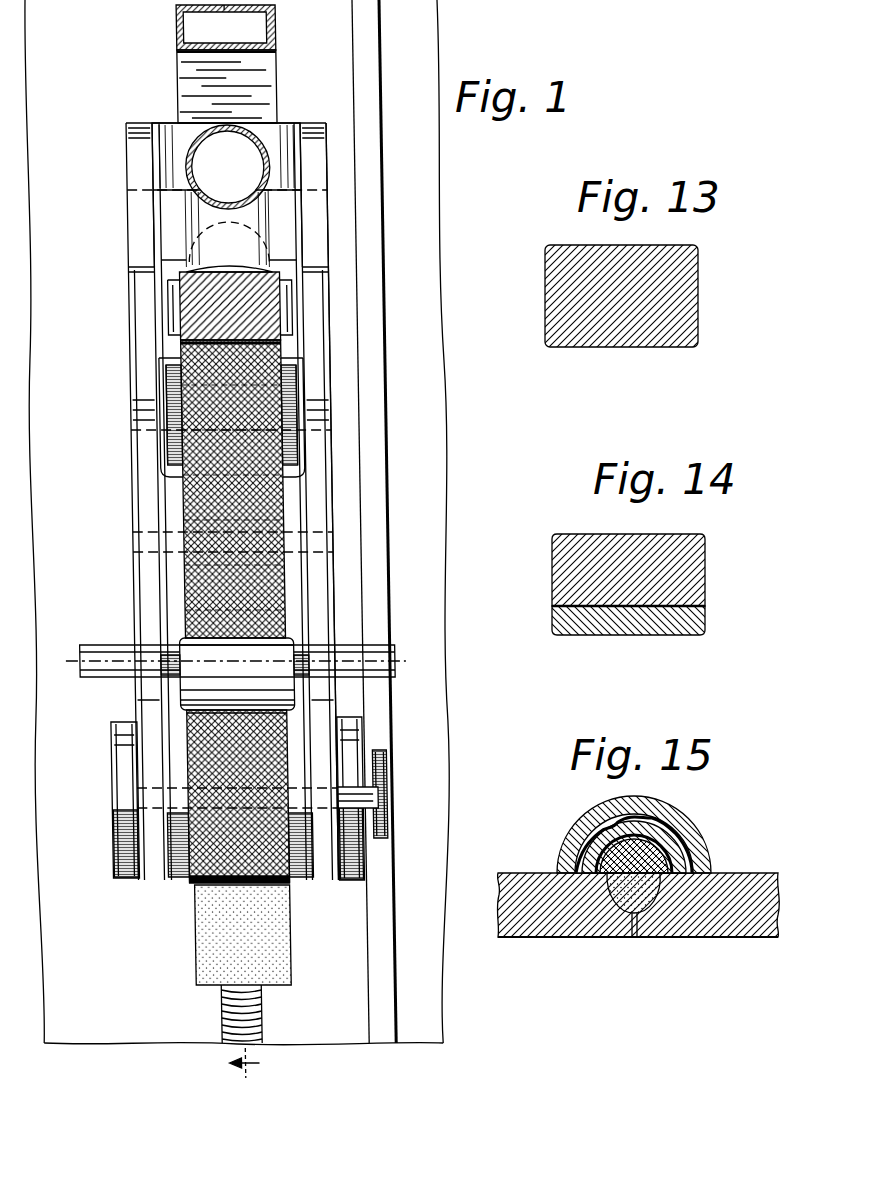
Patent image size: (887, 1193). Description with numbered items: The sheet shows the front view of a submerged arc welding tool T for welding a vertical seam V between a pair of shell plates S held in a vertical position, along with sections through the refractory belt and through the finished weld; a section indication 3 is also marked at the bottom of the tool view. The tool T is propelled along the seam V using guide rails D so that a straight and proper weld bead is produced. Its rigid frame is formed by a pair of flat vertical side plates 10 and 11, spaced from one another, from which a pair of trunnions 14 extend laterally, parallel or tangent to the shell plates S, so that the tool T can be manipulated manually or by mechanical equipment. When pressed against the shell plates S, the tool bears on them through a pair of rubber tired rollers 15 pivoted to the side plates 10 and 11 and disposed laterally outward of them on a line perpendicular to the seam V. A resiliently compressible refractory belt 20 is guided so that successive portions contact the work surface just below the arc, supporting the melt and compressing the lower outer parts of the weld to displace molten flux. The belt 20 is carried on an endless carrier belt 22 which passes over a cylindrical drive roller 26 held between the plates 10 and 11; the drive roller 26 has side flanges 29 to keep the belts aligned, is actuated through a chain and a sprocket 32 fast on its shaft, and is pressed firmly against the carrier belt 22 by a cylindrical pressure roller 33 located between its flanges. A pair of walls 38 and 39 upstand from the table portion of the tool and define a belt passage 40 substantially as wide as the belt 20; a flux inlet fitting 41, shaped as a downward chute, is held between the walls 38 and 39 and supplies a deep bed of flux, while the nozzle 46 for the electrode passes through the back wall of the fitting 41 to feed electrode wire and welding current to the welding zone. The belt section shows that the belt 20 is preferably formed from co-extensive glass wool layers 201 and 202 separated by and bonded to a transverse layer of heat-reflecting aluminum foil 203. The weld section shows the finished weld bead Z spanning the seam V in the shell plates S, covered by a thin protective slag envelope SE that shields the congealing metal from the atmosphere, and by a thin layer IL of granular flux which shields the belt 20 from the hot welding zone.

In FIG. 1, the side plate 10 is at (124, 292).
In FIG. 1, the side plate 11 is at (326, 287).
In FIG. 1, the trunnions 14 is at (69, 661).
In FIG. 1, the rubber tired rollers 15 is at (100, 876).
In FIG. 1, the refractory belt 20 is at (178, 317).
In FIG. 13, the refractory belt 20 is at (698, 302).
In FIG. 1, the carrier belt 22 is at (176, 633).
In FIG. 1, the drive roller 26 is at (166, 882).
In FIG. 1, the side flanges 29 is at (165, 448).
In FIG. 1, the sprocket 32 is at (375, 773).
In FIG. 1, the pressure roller 33 is at (172, 702).
In FIG. 1, the wall 38 is at (158, 262).
In FIG. 1, the wall 39 is at (288, 258).
In FIG. 1, the belt passage 40 is at (272, 298).
In FIG. 1, the flux inlet fitting 41 is at (275, 60).
In FIG. 1, the nozzle 46 is at (258, 152).
In FIG. 14, the glass wool layer 201 is at (700, 562).
In FIG. 15, the glass wool layer 201 is at (575, 855).
In FIG. 14, the glass wool layer 202 is at (705, 628).
In FIG. 15, the glass wool layer 202 is at (636, 845).
In FIG. 14, the aluminum foil layer 203 is at (705, 606).
In FIG. 15, the aluminum foil layer 203 is at (612, 836).
In FIG. 1, the guide rails D is at (368, 14).
In FIG. 1, the welding tool T is at (103, 115).
In FIG. 1, the shell plates S is at (27, 934).
In FIG. 15, the shell plates S is at (560, 925).
In FIG. 1, the weld bead Z is at (218, 1012).
In FIG. 15, the weld bead Z is at (644, 900).
In FIG. 15, the vertical seam V is at (624, 910).
In FIG. 15, the flux layer IL is at (666, 850).
In FIG. 15, the slag envelope SE is at (688, 860).
In FIG. 1, the section line 3 is at (252, 1064).